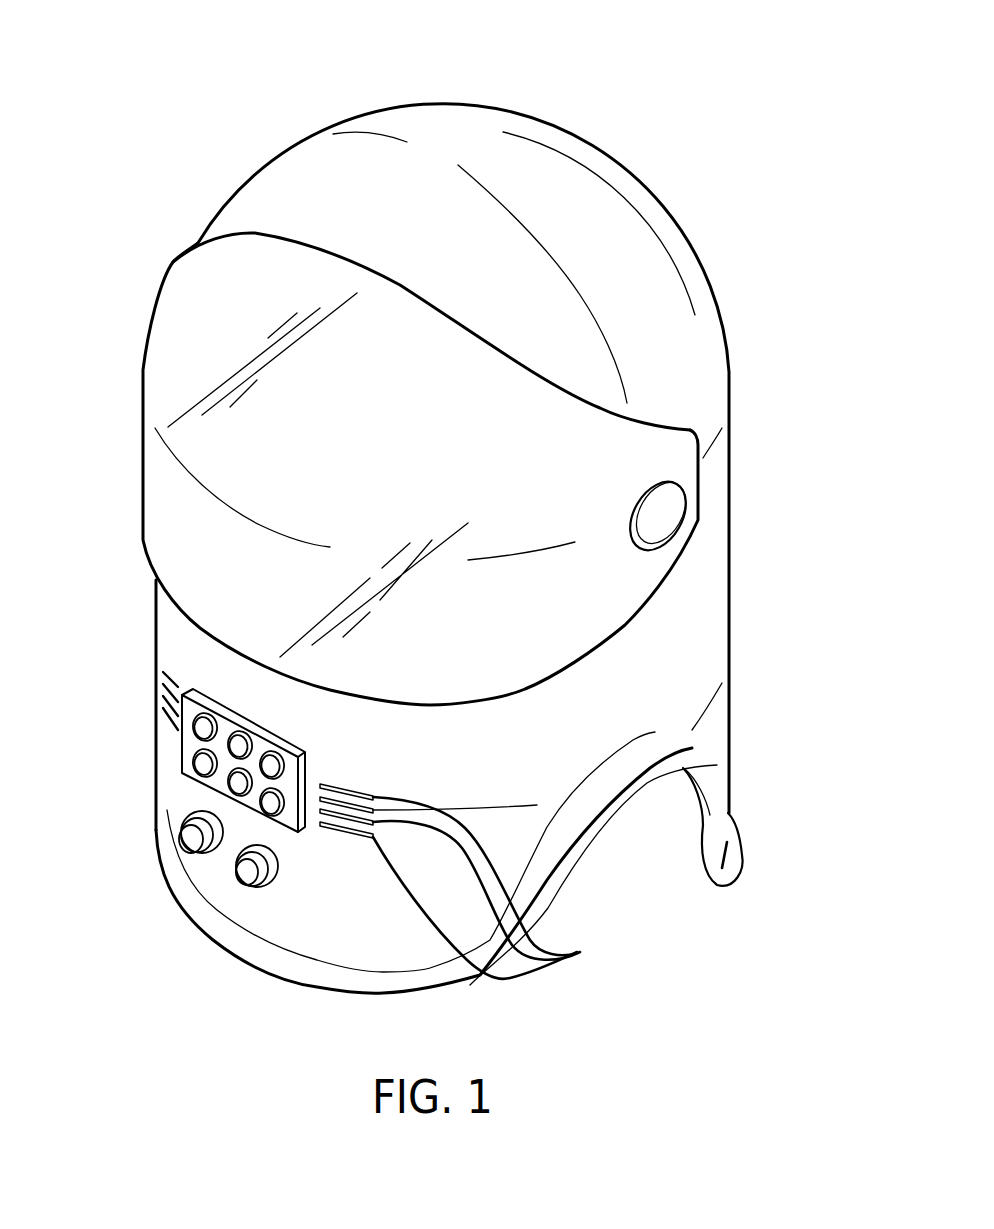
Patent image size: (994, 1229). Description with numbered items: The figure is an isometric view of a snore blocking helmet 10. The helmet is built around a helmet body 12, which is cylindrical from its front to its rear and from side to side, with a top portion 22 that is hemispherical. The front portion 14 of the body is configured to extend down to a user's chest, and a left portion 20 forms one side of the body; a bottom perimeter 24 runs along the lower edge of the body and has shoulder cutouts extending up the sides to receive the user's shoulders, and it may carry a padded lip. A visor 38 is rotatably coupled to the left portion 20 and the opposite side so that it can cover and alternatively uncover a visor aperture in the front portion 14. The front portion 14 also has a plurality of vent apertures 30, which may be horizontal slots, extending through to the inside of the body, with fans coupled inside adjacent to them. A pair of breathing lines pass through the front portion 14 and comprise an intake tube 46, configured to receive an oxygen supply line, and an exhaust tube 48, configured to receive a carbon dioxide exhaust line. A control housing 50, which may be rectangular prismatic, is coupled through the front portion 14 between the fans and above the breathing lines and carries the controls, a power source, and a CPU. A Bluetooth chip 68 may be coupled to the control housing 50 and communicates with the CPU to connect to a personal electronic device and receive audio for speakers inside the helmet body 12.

The snore blocking helmet 10 is at (737, 148).
The helmet body 12 is at (712, 370).
The top portion 22 is at (442, 145).
The visor 38 is at (158, 367).
The front portion 14 is at (178, 648).
The left portion 20 is at (700, 630).
The bottom perimeter 24 is at (317, 967).
The control housing 50 is at (187, 742).
The Bluetooth chip 68 is at (240, 785).
The exhaust tube 48 is at (190, 845).
The intake tube 46 is at (247, 878).
The vent apertures 30 is at (575, 953).